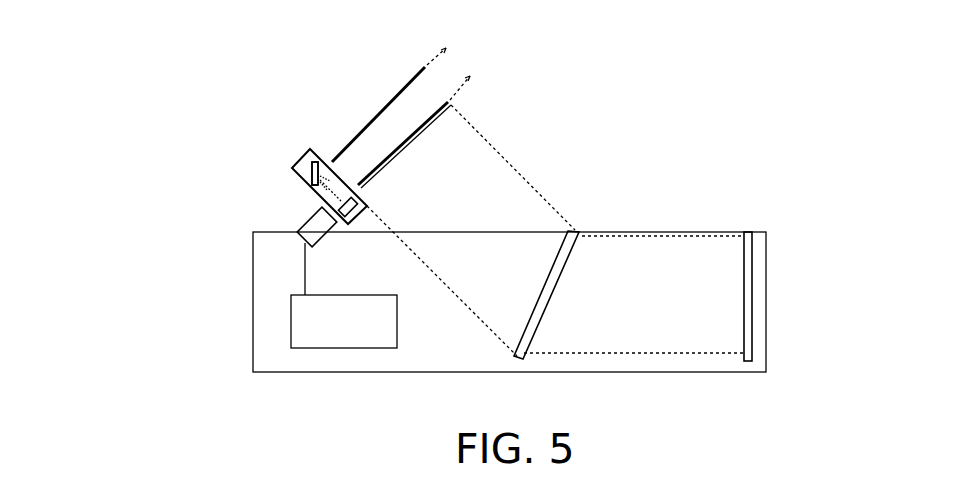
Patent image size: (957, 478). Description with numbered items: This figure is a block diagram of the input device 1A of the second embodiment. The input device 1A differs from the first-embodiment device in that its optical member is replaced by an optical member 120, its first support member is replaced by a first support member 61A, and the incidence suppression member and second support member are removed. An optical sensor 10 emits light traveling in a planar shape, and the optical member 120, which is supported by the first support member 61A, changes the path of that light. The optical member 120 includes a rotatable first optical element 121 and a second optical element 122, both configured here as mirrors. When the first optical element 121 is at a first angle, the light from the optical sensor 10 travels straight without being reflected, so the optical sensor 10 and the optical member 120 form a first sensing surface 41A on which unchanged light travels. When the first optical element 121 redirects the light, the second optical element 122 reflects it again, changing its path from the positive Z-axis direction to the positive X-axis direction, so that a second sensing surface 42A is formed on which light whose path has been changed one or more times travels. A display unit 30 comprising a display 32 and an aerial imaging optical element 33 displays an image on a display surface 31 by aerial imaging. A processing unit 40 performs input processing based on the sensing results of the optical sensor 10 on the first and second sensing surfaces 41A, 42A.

The input device 1A is at (580, 63).
The optical member 120 is at (242, 188).
The first optical element 121 is at (312, 203).
The second optical element 122 is at (296, 162).
The first support member 61A is at (304, 162).
The second sensing surface 42A is at (337, 160).
The first sensing surface 41A is at (363, 176).
The display surface 31 is at (378, 171).
The optical sensor 10 is at (322, 235).
The processing unit 40 is at (350, 294).
The display unit 30 is at (665, 259).
The aerial imaging optical element 33 is at (578, 231).
The display 32 is at (777, 278).